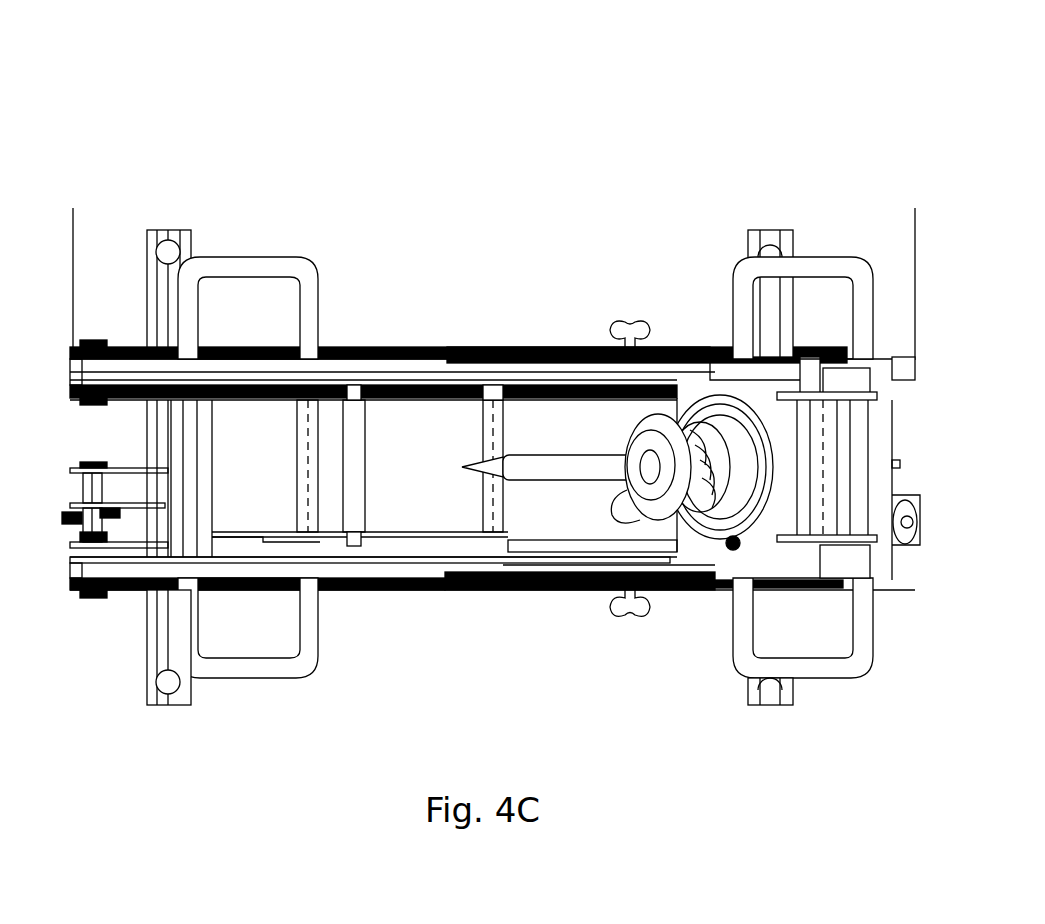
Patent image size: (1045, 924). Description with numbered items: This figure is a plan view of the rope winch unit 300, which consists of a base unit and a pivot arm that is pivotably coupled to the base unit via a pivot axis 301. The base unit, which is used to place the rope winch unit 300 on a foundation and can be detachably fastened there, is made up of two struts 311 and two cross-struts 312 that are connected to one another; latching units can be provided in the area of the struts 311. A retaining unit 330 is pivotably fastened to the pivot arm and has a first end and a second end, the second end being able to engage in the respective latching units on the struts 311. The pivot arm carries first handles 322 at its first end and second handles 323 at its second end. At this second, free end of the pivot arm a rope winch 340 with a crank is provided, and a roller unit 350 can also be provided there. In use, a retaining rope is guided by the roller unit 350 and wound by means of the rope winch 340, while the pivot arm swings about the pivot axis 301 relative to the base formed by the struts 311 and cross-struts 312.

The rope winch unit 300 is at (253, 127).
The pivot axis 301 is at (85, 595).
The struts 311 is at (547, 590).
The cross-struts 312 is at (157, 705).
The first handles 322 is at (232, 263).
The second handles 323 is at (812, 262).
The retaining unit 330 is at (355, 440).
The rope winch 340 is at (710, 415).
The roller unit 350 is at (833, 472).